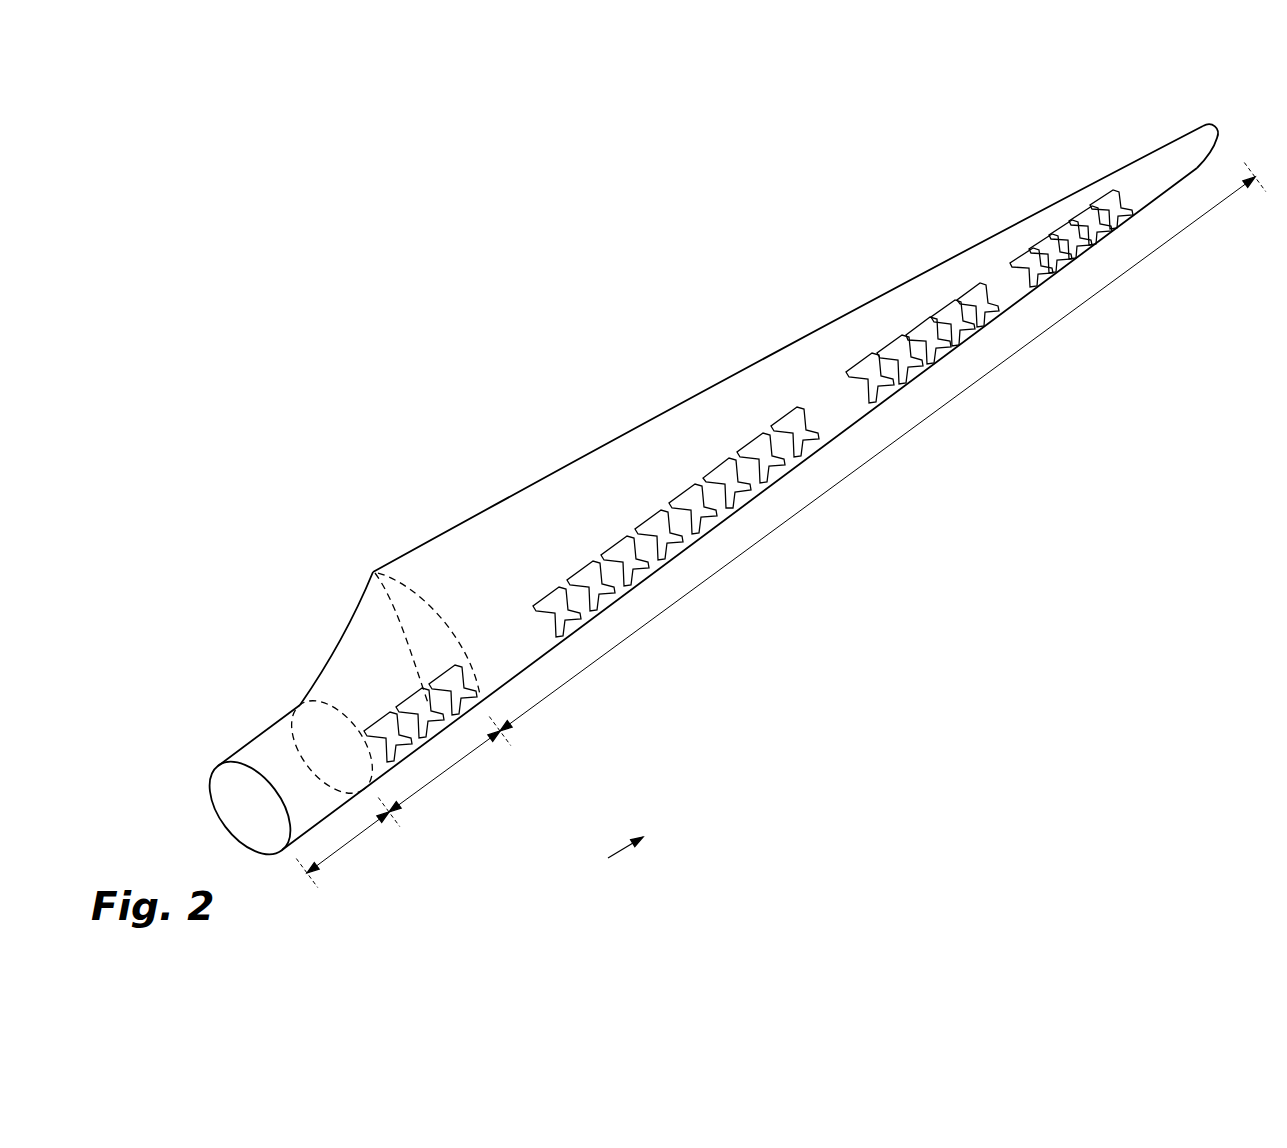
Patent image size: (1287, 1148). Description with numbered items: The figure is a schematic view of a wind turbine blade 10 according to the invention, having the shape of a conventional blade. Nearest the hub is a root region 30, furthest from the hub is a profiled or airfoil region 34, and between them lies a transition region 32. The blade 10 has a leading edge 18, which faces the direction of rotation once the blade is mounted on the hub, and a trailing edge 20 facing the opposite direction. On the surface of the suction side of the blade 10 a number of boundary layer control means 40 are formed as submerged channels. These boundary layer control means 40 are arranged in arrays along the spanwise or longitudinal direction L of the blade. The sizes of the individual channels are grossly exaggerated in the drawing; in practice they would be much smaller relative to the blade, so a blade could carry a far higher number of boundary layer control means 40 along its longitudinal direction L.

The wind turbine blade 10 is at (537, 356).
The leading edge 18 is at (915, 380).
The trailing edge 20 is at (923, 272).
The root region 30 is at (350, 841).
The transition region 32 is at (447, 767).
The airfoil region 34 is at (807, 510).
The boundary layer control means 40 is at (575, 638).
The longitudinal direction L is at (634, 834).